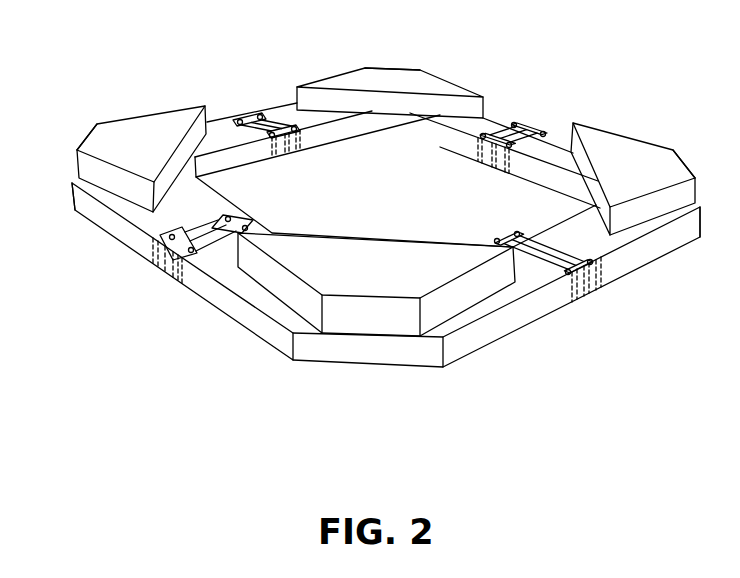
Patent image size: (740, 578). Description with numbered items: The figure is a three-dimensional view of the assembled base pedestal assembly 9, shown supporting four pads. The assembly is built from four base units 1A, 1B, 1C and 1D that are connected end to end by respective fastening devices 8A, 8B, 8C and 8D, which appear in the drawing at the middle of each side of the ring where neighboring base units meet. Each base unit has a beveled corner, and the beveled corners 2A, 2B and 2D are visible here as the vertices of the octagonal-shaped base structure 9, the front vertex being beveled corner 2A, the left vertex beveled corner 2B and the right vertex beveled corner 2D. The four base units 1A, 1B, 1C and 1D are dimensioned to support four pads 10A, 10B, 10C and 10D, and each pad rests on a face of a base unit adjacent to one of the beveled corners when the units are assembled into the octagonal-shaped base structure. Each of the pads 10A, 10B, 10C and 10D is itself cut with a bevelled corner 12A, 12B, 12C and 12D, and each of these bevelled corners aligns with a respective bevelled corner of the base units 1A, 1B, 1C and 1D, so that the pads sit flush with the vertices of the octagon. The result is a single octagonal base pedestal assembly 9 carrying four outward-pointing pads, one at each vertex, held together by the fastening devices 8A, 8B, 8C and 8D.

The base pedestal assembly 9 is at (641, 86).
The base unit 1A is at (213, 307).
The base unit 1B is at (68, 225).
The base unit 1C is at (500, 120).
The base unit 1D is at (652, 262).
The beveled corner 2A is at (326, 365).
The beveled corner 2B is at (72, 183).
The beveled corner 2D is at (700, 210).
The fastening device 8A is at (150, 240).
The fastening device 8B is at (253, 117).
The fastening device 8C is at (524, 130).
The fastening device 8D is at (582, 272).
The pad 10A is at (400, 323).
The pad 10B is at (121, 135).
The pad 10C is at (403, 65).
The pad 10D is at (647, 164).
The bevelled corner 12A is at (380, 320).
The bevelled corner 12B is at (82, 135).
The bevelled corner 12C is at (396, 64).
The bevelled corner 12D is at (697, 185).